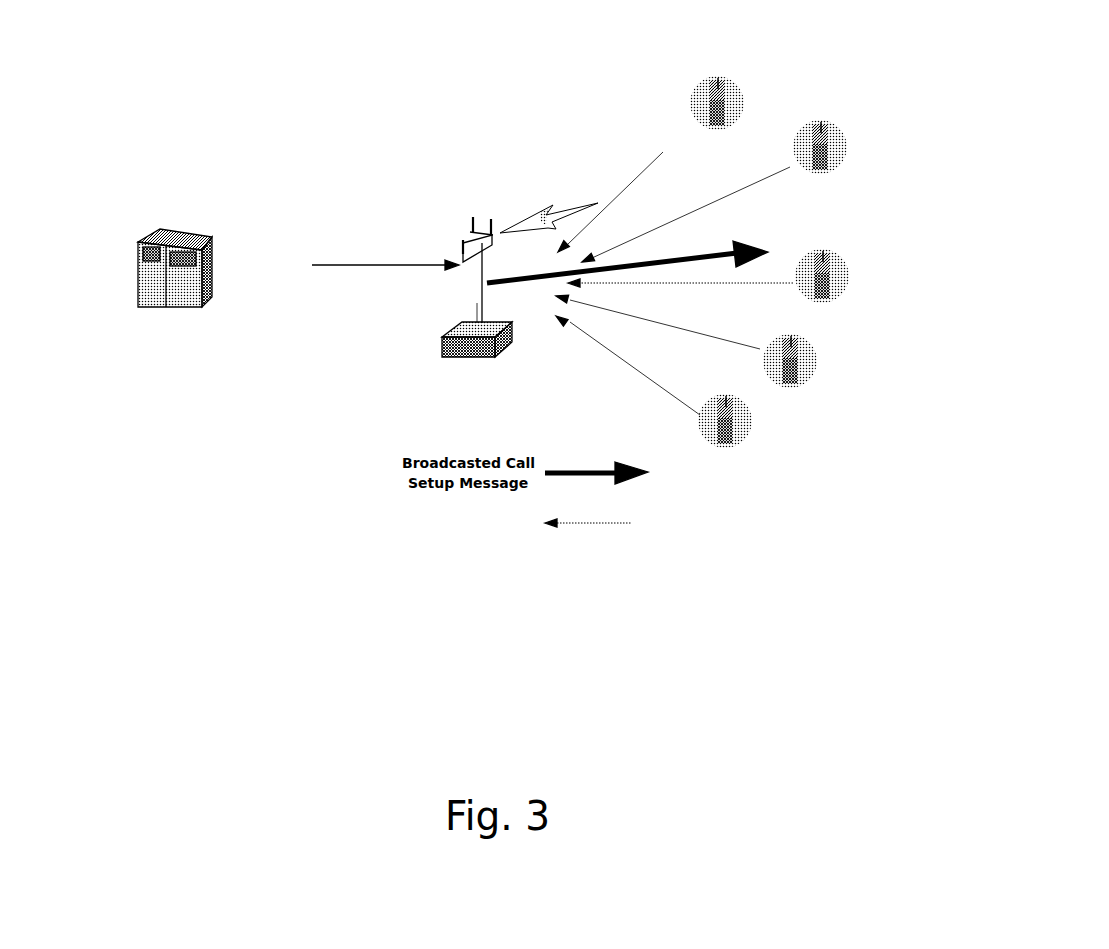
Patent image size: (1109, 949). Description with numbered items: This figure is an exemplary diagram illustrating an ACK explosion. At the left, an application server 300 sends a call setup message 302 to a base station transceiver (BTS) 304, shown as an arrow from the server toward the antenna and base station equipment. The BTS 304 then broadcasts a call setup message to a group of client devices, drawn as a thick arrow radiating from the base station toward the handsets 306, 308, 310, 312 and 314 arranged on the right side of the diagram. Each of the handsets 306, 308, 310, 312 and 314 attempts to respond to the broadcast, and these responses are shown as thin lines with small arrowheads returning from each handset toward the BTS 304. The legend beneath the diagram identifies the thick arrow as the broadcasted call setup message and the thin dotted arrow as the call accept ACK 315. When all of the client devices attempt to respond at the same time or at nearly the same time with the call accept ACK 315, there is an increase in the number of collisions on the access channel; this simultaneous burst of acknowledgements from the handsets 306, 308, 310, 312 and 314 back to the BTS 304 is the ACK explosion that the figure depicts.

The application server 300 is at (163, 220).
The call setup message 302 is at (345, 210).
The base station transceiver (BTS) 304 is at (605, 304).
The handset 306 is at (712, 72).
The handset 308 is at (852, 141).
The handset 310 is at (870, 277).
The handset 312 is at (827, 363).
The handset 314 is at (752, 422).
The call accept ACK 315 is at (487, 538).